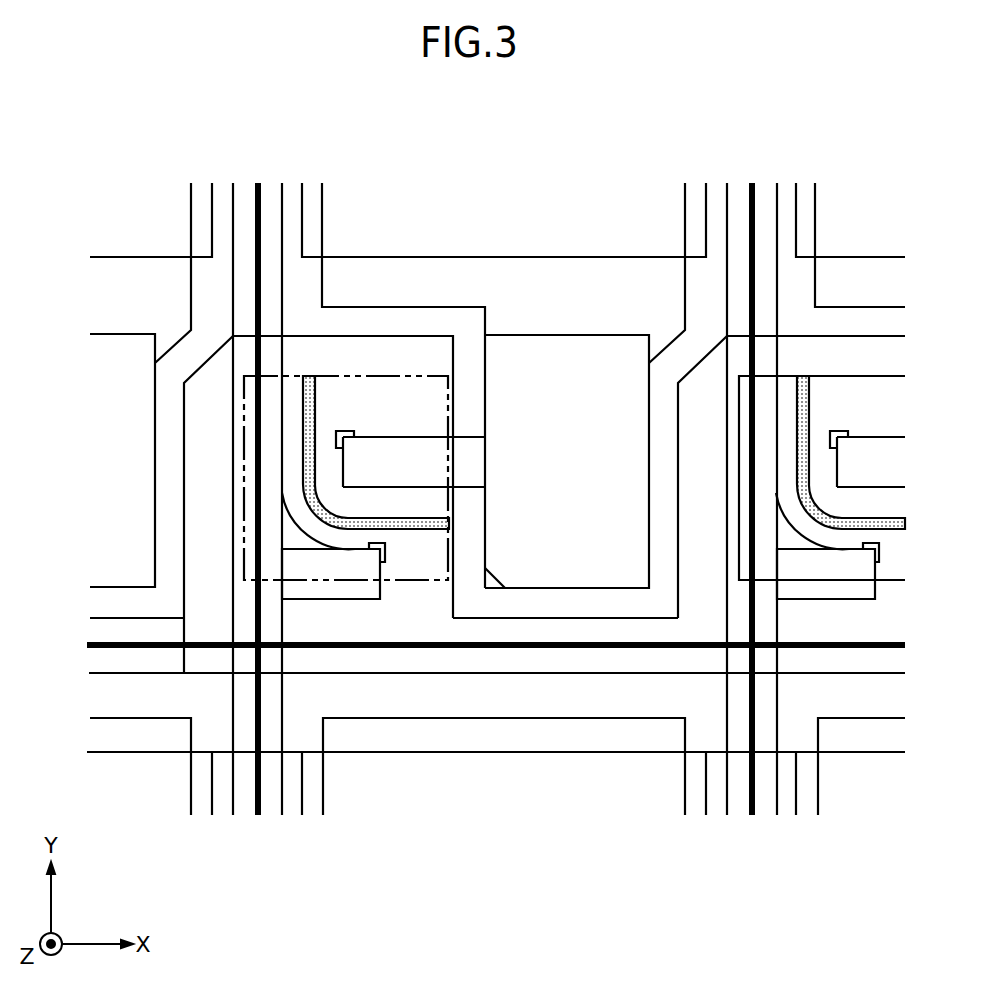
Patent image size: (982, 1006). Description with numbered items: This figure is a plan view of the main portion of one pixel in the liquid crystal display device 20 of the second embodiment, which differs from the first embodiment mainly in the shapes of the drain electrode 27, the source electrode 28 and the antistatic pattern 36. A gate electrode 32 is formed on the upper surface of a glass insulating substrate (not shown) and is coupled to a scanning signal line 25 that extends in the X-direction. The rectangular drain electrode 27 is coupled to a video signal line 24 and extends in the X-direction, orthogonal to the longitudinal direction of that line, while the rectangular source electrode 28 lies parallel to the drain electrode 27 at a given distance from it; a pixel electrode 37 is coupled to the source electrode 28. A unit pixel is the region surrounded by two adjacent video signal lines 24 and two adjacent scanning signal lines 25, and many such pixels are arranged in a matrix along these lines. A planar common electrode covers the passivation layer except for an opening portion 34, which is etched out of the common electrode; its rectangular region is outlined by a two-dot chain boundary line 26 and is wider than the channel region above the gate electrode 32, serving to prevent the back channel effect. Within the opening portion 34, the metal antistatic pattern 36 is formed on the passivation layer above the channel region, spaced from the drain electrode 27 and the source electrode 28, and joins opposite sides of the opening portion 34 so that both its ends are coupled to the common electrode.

The liquid crystal display device 20 is at (603, 168).
The video signal line 24 is at (232, 176).
The scanning signal line 25 is at (75, 615).
The boundary line 26 is at (450, 423).
The drain electrode 27 is at (355, 568).
The source electrode 28 is at (417, 475).
The gate electrode 32 is at (207, 473).
The opening portion 34 is at (410, 405).
The antistatic pattern 36 is at (448, 521).
The pixel electrode 37 is at (575, 352).